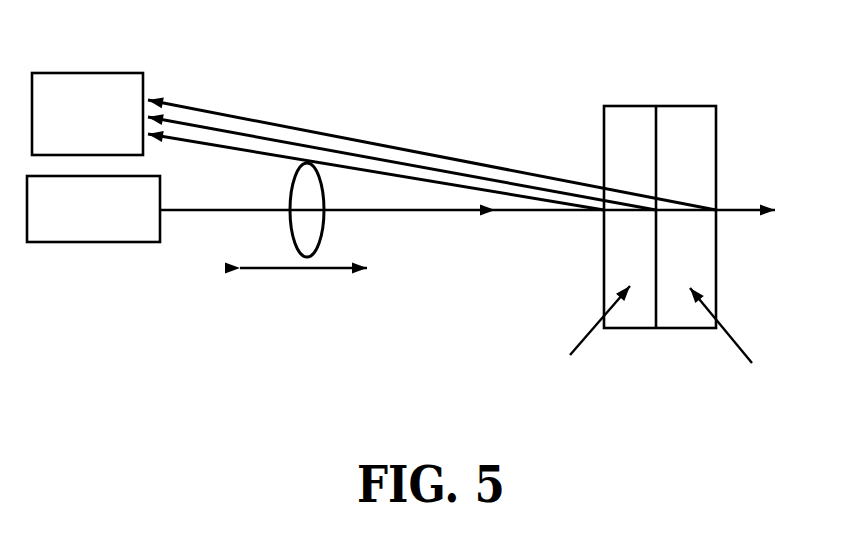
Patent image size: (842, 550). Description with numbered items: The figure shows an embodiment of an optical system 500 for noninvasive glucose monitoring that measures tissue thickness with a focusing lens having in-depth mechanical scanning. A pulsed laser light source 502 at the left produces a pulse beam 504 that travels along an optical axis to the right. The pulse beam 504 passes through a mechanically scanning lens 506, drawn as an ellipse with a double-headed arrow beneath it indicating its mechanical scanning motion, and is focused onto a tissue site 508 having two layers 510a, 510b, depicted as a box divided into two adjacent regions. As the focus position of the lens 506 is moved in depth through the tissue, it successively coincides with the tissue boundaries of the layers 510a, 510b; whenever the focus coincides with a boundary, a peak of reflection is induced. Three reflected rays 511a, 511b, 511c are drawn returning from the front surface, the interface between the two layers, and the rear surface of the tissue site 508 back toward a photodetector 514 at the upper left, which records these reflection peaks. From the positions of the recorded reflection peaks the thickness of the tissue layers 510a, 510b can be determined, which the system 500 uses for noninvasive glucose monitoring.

The system 500 is at (397, 86).
The pulsed laser light source 502 is at (93, 209).
The pulse beam 504 is at (235, 210).
The mechanically scanning lens 506 is at (323, 237).
The tissue site 508 is at (663, 354).
The tissue layer 510a is at (630, 217).
The tissue layer 510b is at (686, 217).
The reflected beam from first surface 511a is at (208, 142).
The reflected beam from layer interface 511b is at (260, 135).
The reflected beam from back surface 511c is at (307, 128).
The photodetector 514 is at (87, 114).